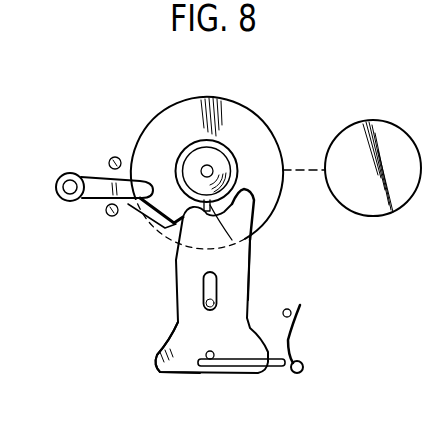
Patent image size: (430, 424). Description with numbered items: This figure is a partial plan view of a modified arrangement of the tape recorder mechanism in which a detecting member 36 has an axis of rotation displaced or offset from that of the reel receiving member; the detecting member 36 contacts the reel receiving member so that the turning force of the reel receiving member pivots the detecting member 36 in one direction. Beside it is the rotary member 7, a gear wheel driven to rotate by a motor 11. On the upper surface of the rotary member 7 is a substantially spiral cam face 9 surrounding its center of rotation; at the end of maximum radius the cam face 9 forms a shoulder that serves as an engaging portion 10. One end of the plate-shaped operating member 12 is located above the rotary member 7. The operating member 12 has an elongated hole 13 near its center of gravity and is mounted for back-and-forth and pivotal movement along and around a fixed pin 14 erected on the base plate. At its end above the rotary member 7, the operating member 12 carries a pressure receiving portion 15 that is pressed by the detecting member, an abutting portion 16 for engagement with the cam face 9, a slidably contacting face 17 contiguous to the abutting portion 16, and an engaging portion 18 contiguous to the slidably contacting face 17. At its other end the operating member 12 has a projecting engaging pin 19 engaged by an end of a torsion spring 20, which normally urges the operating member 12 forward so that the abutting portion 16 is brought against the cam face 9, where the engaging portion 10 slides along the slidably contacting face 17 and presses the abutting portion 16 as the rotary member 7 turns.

The rotary member 7 is at (213, 97).
The cam face 9 is at (183, 148).
The engaging portion 10 is at (247, 240).
The motor 11 is at (378, 122).
The operating member 12 is at (182, 300).
The elongated hole 13 is at (200, 281).
The fixed pin 14 is at (178, 320).
The pressure receiving portion 15 is at (125, 216).
The abutting portion 16 is at (247, 190).
The slidably contacting face 17 is at (133, 212).
The engaging portion 18 is at (167, 223).
The engaging pin 19 is at (211, 352).
The torsion spring 20 is at (300, 340).
The detecting member 36 is at (100, 178).